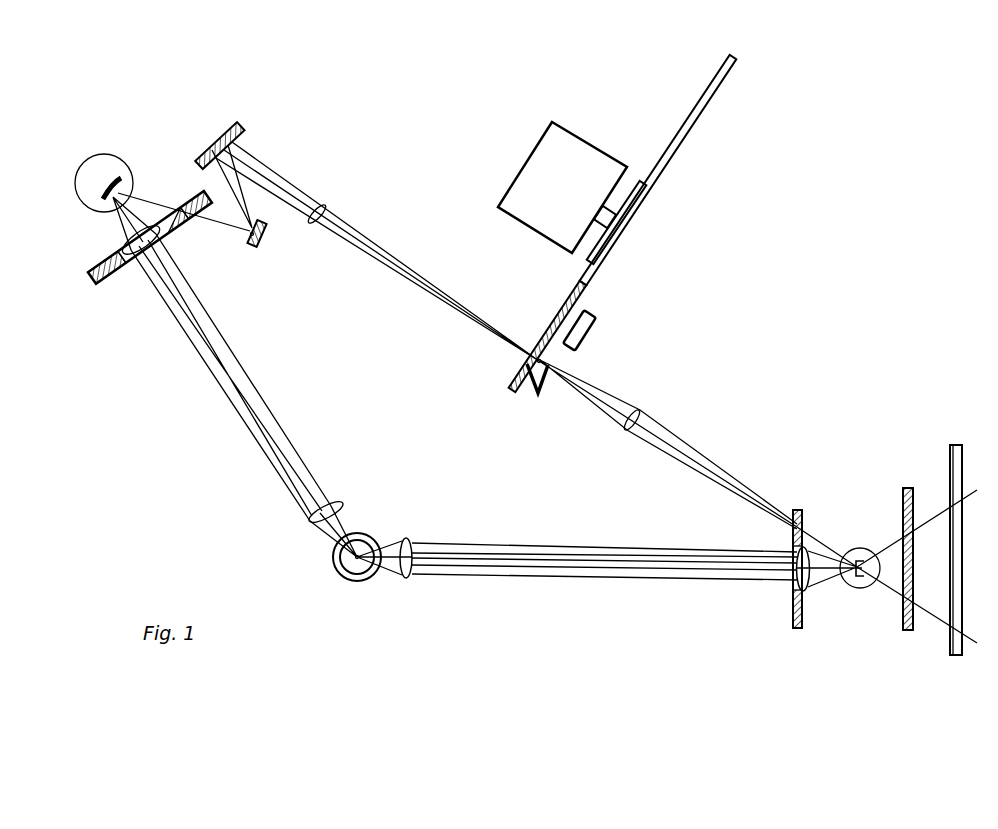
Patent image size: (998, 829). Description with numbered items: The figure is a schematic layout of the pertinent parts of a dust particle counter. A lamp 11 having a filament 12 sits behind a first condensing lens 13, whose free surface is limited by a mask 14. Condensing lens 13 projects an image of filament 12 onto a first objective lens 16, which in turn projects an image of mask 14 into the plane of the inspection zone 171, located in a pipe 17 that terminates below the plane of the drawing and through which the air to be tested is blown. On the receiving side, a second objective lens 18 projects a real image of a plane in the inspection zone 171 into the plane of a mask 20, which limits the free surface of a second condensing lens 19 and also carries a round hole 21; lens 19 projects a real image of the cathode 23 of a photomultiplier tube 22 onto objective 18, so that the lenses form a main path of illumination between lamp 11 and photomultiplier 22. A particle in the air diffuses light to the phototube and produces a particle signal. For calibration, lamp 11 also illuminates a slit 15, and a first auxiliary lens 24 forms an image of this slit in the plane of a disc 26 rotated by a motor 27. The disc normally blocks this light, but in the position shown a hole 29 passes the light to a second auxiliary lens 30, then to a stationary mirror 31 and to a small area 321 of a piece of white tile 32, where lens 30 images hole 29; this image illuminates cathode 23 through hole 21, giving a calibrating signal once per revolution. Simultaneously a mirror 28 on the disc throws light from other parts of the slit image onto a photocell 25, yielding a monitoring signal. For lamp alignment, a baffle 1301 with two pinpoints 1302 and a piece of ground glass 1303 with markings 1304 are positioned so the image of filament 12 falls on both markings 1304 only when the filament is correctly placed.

The lamp 11 is at (856, 582).
The filament 12 is at (860, 548).
The first condensing lens 13 is at (790, 585).
The mask 14 is at (794, 612).
The slit 15 is at (804, 512).
The first objective lens 16 is at (405, 580).
The pipe 17 is at (340, 568).
The inspection zone 171 is at (355, 575).
The second objective lens 18 is at (310, 518).
The second condensing lens 19 is at (137, 262).
The mask 20 is at (100, 280).
The round hole 21 is at (178, 214).
The photomultiplier tube 22 is at (130, 150).
The cathode 23 is at (90, 200).
The first auxiliary lens 24 is at (642, 416).
The photocell 25 is at (599, 332).
The disc 26 is at (706, 127).
The motor 27 is at (592, 142).
The mirror 28 is at (544, 385).
The hole 29 is at (530, 361).
The second auxiliary lens 30 is at (324, 206).
The stationary mirror 31 is at (234, 130).
The piece of white tile 32 is at (258, 243).
The illuminated area 321 is at (250, 240).
The baffle 1301 is at (904, 490).
The pinpoints 1302 is at (903, 530).
The piece of ground glass 1303 is at (950, 450).
The markings 1304 is at (952, 500).